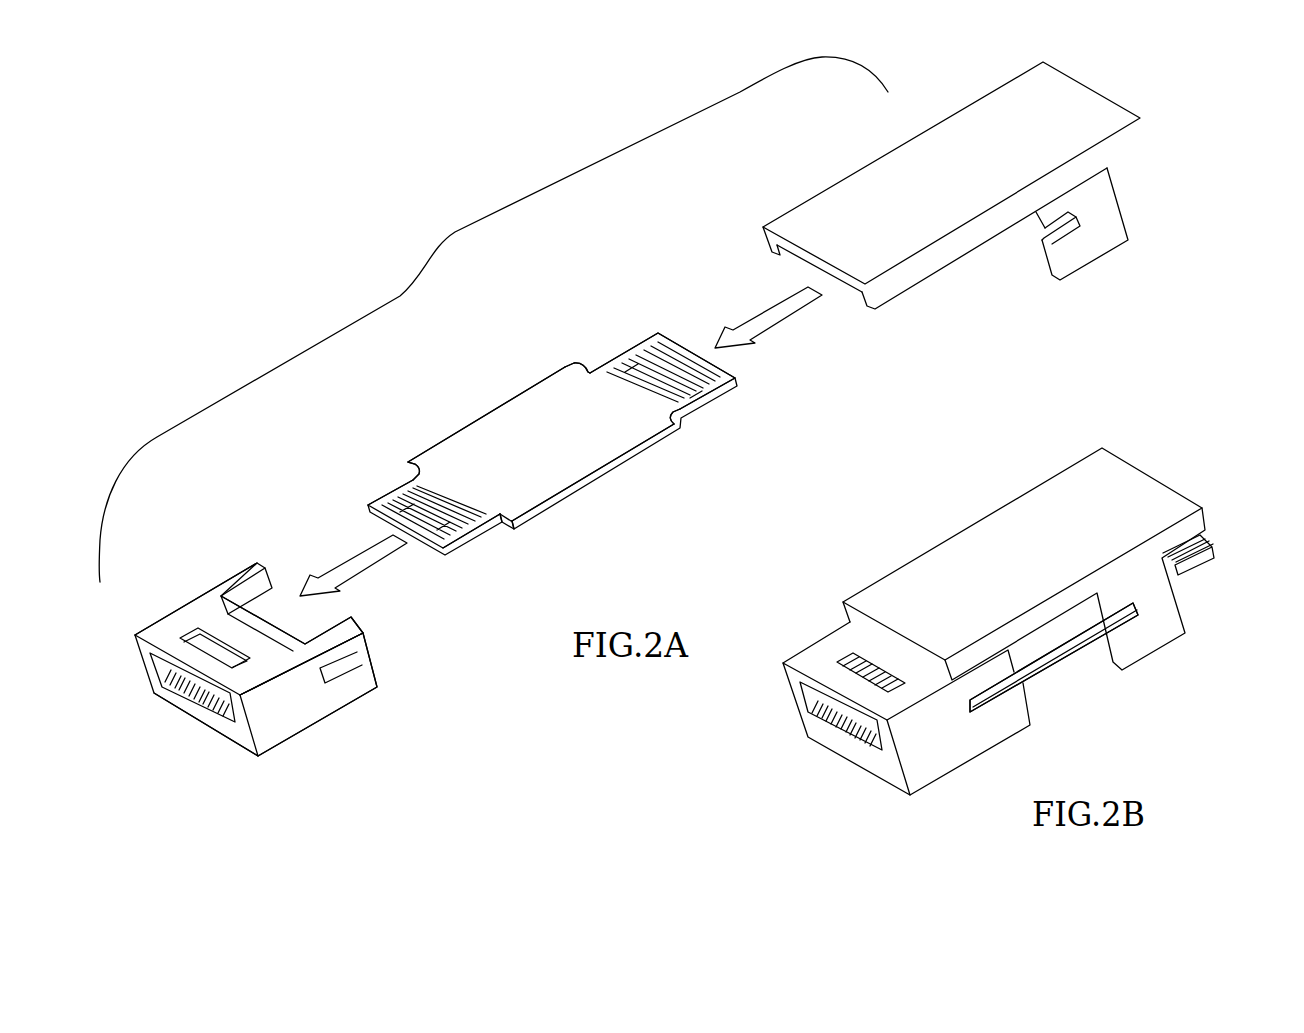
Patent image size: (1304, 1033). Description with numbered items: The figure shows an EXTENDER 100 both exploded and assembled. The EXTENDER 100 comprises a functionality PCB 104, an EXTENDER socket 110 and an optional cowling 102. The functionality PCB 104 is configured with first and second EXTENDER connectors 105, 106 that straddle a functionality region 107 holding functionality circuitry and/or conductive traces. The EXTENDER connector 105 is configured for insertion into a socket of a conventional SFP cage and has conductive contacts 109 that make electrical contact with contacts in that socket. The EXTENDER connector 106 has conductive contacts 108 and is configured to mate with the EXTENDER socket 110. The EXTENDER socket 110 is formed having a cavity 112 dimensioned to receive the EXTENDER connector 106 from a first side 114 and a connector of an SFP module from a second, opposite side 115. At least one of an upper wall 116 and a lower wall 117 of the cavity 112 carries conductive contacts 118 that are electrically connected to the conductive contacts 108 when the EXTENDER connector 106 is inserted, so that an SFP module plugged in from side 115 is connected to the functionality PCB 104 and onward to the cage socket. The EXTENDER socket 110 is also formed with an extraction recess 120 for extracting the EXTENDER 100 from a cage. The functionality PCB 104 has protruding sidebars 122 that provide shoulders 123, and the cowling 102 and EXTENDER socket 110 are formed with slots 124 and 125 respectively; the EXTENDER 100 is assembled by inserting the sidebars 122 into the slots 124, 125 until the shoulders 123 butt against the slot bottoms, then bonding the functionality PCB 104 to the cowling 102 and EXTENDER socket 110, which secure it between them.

In FIG. 2A, the EXTENDER 100 is at (432, 154).
In FIG. 2B, the EXTENDER 100 is at (988, 595).
In FIG. 2A, the cowling 102 is at (927, 185).
In FIG. 2B, the cowling 102 is at (1033, 560).
In FIG. 2A, the functionality PCB 104 is at (604, 466).
In FIG. 2B, the functionality PCB 104 is at (1099, 636).
In FIG. 2A, the EXTENDER connector 105 is at (746, 403).
In FIG. 2B, the EXTENDER connector 105 is at (1199, 592).
In FIG. 2A, the EXTENDER connector 106 is at (464, 572).
In FIG. 2A, the functionality region 107 is at (614, 438).
In FIG. 2A, the conductive contacts 108 is at (410, 503).
In FIG. 2A, the conductive contacts 109 is at (673, 373).
In FIG. 2A, the EXTENDER socket 110 is at (272, 659).
In FIG. 2B, the EXTENDER socket 110 is at (829, 763).
In FIG. 2A, the cavity 112 is at (157, 692).
In FIG. 2A, the first side 114 is at (332, 612).
In FIG. 2A, the second side 115 is at (233, 725).
In FIG. 2A, the upper wall 116 is at (158, 661).
In FIG. 2A, the lower wall 117 is at (203, 713).
In FIG. 2A, the conductive contacts 118 is at (186, 691).
In FIG. 2A, the extraction recess 120 is at (190, 635).
In FIG. 2A, the protruding sidebars 122 is at (548, 393).
In FIG. 2A, the shoulders 123 is at (590, 346).
In FIG. 2A, the slot 124 is at (1044, 236).
In FIG. 2A, the slot 125 is at (360, 650).